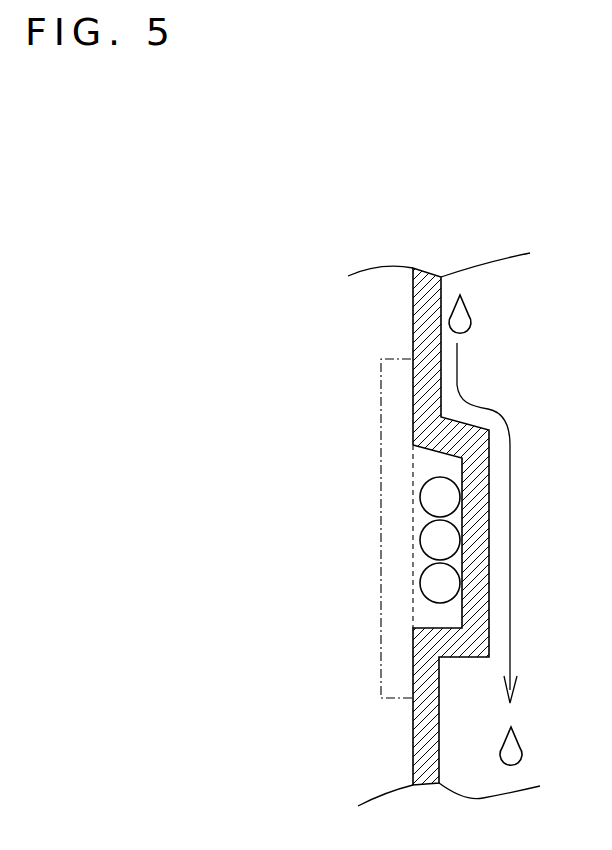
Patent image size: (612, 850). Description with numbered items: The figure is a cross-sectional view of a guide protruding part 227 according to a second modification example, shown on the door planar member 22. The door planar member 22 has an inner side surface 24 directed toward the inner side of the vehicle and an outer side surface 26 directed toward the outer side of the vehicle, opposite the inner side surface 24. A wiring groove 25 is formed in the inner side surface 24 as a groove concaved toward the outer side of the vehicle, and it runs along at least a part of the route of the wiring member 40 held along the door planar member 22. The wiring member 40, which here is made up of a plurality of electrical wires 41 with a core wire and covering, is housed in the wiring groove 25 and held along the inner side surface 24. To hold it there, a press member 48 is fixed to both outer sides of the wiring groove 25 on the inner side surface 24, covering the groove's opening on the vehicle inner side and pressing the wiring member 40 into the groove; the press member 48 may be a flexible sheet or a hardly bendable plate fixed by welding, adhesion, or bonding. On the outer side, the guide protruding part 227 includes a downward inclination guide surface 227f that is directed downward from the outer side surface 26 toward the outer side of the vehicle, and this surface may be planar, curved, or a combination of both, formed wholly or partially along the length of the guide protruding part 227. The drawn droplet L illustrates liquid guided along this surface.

The door planar member 22 is at (412, 298).
The inner side surface 24 is at (412, 337).
The wiring groove 25 is at (461, 616).
The outer side surface 26 is at (440, 703).
The wiring member 40 is at (420, 485).
The electrical wires 41 is at (419, 497).
The press member 48 is at (381, 443).
The guide protruding part 227 is at (489, 526).
The downward inclination guide surface 227f is at (472, 425).
The liquid droplet L is at (473, 312).